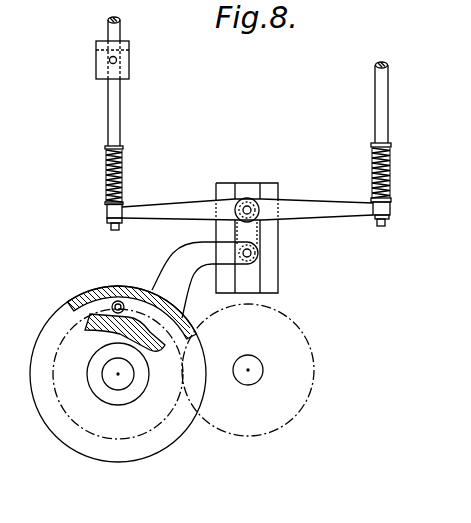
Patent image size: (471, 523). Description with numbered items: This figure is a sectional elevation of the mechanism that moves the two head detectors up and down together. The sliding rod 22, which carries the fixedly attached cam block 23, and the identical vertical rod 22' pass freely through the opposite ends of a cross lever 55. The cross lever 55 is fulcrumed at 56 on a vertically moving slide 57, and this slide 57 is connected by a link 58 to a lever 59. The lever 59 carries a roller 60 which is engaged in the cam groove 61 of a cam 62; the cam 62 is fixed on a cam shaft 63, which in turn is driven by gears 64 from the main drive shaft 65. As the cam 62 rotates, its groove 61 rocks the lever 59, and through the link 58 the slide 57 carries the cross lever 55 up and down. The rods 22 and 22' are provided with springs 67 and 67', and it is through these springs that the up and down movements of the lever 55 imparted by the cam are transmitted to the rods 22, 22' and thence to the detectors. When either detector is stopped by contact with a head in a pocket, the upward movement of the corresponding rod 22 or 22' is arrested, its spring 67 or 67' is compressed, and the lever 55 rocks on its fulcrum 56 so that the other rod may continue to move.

The sliding rod 22 is at (130, 81).
The cam block 23 is at (130, 72).
The spring 67 is at (131, 175).
The cross lever 55 is at (199, 200).
The fulcrum 56 is at (250, 199).
The vertically moving slide 57 is at (258, 226).
The link 58 is at (249, 234).
The vertical rod 22' is at (399, 102).
The spring 67' is at (399, 172).
The lever 59 is at (180, 258).
The roller 60 is at (117, 286).
The cam groove 61 is at (74, 306).
The cam 62 is at (83, 412).
The cam shaft 63 is at (124, 381).
The gears 64 is at (220, 423).
The main drive shaft 65 is at (262, 366).